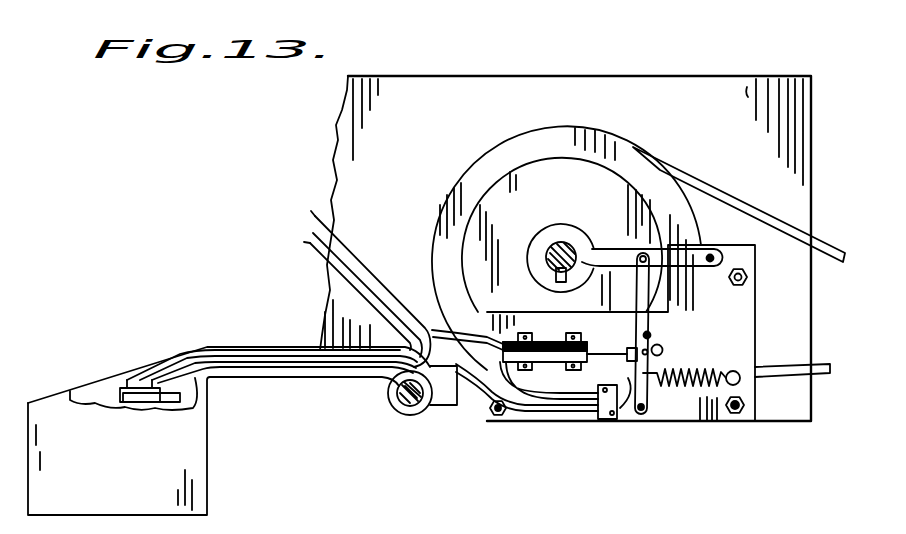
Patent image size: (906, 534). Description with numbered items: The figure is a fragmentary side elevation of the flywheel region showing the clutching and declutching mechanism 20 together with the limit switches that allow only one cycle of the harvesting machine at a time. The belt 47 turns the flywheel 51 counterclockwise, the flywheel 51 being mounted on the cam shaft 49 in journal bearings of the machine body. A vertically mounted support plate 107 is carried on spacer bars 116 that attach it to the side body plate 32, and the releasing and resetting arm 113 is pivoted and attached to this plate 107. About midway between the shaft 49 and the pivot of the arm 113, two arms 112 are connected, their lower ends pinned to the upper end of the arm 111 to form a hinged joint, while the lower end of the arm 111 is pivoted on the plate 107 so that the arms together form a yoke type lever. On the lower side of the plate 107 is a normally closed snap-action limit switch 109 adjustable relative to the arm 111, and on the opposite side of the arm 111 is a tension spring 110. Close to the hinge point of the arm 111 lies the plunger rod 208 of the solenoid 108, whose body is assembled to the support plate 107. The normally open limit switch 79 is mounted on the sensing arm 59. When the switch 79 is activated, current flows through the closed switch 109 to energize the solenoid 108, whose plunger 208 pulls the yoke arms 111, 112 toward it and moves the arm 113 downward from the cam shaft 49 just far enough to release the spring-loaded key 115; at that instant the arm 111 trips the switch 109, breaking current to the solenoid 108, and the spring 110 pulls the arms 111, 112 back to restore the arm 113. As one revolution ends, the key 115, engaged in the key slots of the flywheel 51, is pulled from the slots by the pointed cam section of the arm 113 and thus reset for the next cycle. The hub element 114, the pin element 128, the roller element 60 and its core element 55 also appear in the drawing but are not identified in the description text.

The side body plate 32 is at (530, 76).
The flywheel 51 is at (500, 141).
The belt 47 is at (705, 178).
The hub 114 is at (562, 223).
The cam shaft 49 is at (545, 253).
The spring-loaded key 115 is at (540, 270).
The releasing and resetting arm 113 is at (620, 249).
The arms 112 is at (670, 318).
The spacer bars 116 is at (733, 266).
The tension spring 110 is at (676, 390).
The pin 128 is at (663, 348).
The arm 111 is at (668, 367).
The plunger rod 208 is at (607, 352).
The solenoid 108 is at (552, 372).
The normally closed limit snap-action switch 109 is at (605, 421).
The support plate 107 is at (492, 396).
The roller 60 is at (386, 398).
The roller shaft 55 is at (403, 404).
The sensing arm 59 is at (245, 350).
The normally open limit switch 79 is at (147, 388).
The clutching and declutching mechanism 20 is at (525, 427).